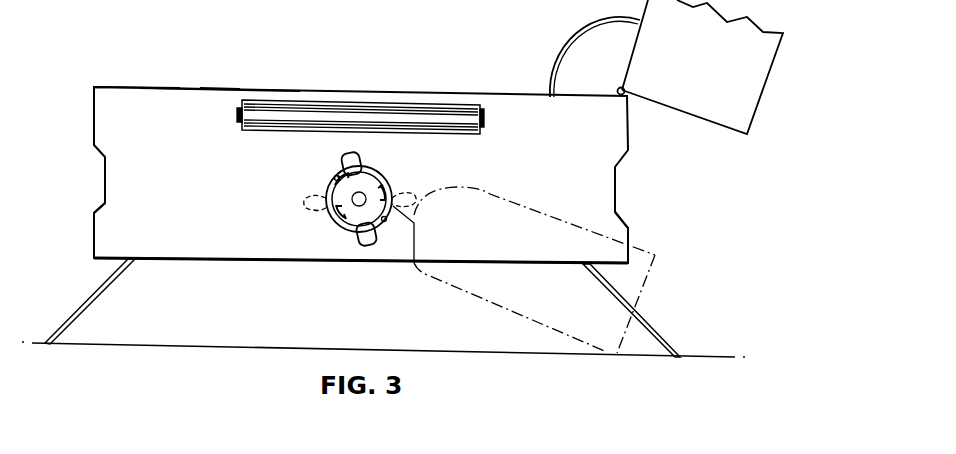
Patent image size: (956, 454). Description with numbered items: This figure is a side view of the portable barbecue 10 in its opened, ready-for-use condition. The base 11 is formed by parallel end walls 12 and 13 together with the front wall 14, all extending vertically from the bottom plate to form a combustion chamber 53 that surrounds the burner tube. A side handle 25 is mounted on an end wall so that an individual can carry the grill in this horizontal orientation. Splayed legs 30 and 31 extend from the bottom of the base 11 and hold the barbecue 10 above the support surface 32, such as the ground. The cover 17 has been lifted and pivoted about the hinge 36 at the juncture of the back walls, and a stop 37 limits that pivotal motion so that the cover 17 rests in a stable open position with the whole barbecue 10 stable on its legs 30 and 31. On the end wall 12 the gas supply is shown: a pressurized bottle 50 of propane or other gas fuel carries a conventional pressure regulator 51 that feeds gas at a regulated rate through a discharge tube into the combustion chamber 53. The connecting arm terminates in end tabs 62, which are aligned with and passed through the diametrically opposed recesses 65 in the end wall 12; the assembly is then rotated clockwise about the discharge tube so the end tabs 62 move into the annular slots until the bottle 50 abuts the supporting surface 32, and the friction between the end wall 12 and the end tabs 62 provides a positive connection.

The portable barbecue 10 is at (316, 78).
The base 11 is at (94, 118).
The end wall 12 is at (180, 98).
The end wall 13 is at (94, 232).
The front wall 14 is at (628, 234).
The cover 17 is at (748, 97).
The side handle 25 is at (410, 108).
The splayed leg 30 is at (660, 334).
The splayed leg 31 is at (88, 297).
The support surface 32 is at (716, 352).
The hinge 36 is at (628, 96).
The stop 37 is at (568, 40).
The pressurized bottle 50 is at (582, 228).
The pressure regulator 51 is at (331, 231).
The combustion chamber 53 is at (207, 133).
The end tabs 62 is at (306, 200).
The recesses 65 is at (377, 164).